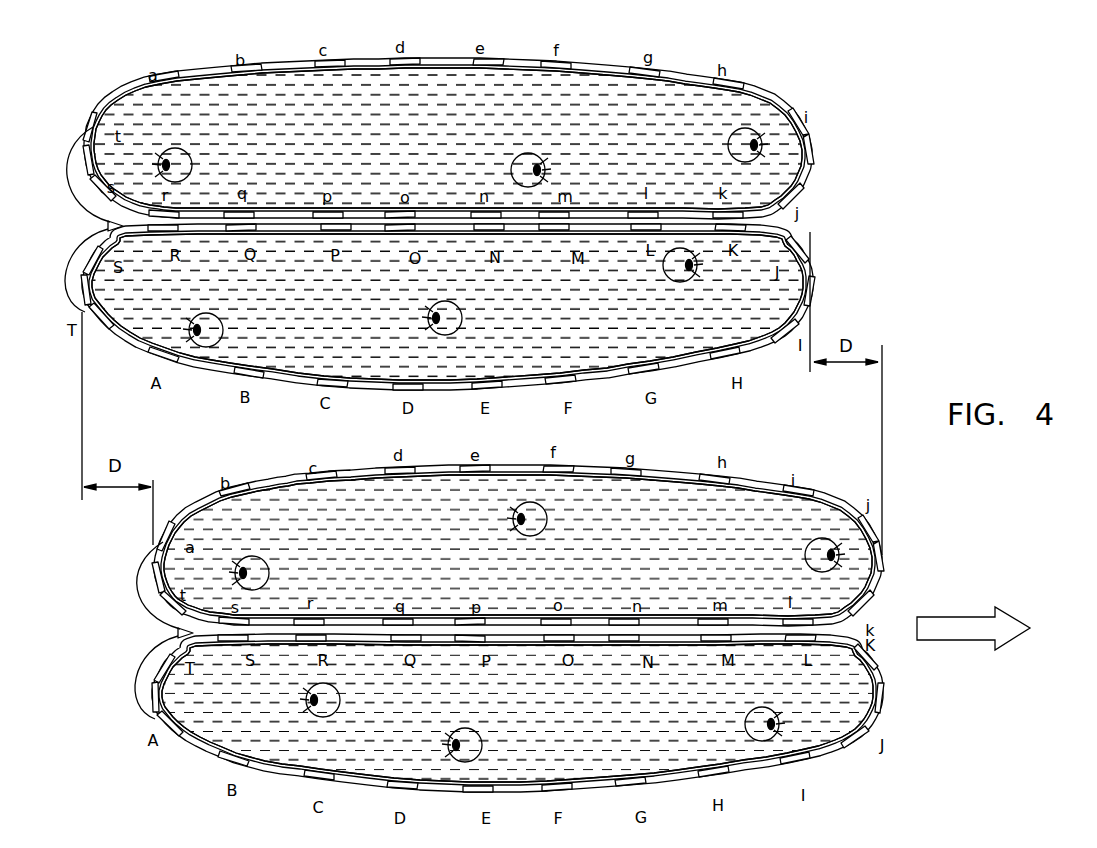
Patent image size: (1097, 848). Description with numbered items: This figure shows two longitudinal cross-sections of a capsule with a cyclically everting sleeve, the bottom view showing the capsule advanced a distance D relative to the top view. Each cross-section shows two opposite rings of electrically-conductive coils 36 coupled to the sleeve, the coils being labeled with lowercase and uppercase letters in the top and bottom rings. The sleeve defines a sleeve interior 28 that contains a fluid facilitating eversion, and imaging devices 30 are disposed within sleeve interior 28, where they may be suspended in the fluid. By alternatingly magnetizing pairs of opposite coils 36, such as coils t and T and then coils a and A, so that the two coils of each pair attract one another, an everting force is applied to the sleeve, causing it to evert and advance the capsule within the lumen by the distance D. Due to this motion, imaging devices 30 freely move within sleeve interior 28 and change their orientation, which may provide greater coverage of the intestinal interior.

The sleeve interior 28 is at (383, 129).
The imaging device 30 is at (186, 158).
The electrically-conductive coil 36 is at (176, 82).